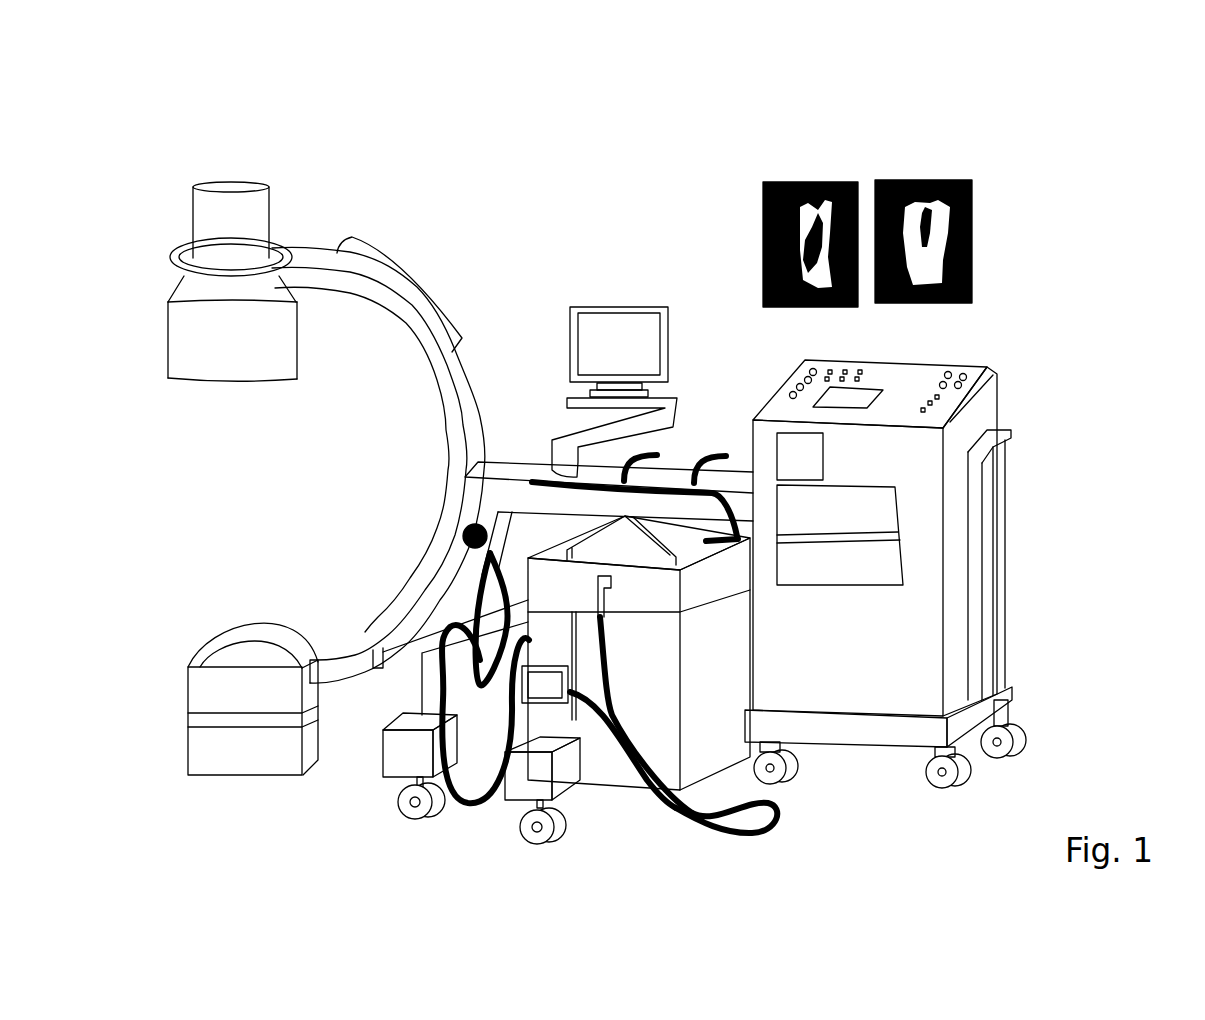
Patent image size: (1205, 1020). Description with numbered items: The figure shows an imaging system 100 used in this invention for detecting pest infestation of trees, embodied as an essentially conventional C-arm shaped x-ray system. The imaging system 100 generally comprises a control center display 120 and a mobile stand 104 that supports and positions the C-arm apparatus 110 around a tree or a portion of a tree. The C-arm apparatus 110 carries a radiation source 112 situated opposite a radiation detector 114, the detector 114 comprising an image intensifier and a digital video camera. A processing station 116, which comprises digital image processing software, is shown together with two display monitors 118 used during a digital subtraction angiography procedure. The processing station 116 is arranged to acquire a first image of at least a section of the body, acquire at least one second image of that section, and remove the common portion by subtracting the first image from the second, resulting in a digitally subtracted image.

The imaging system 100 is at (1035, 97).
The mobile stand 104 is at (701, 687).
The C-arm apparatus 110 is at (457, 398).
The radiation source 112 is at (235, 697).
The radiation detector 114 is at (233, 190).
The processing station 116 is at (953, 533).
The display monitors 118 is at (828, 181).
The control center display 120 is at (621, 320).